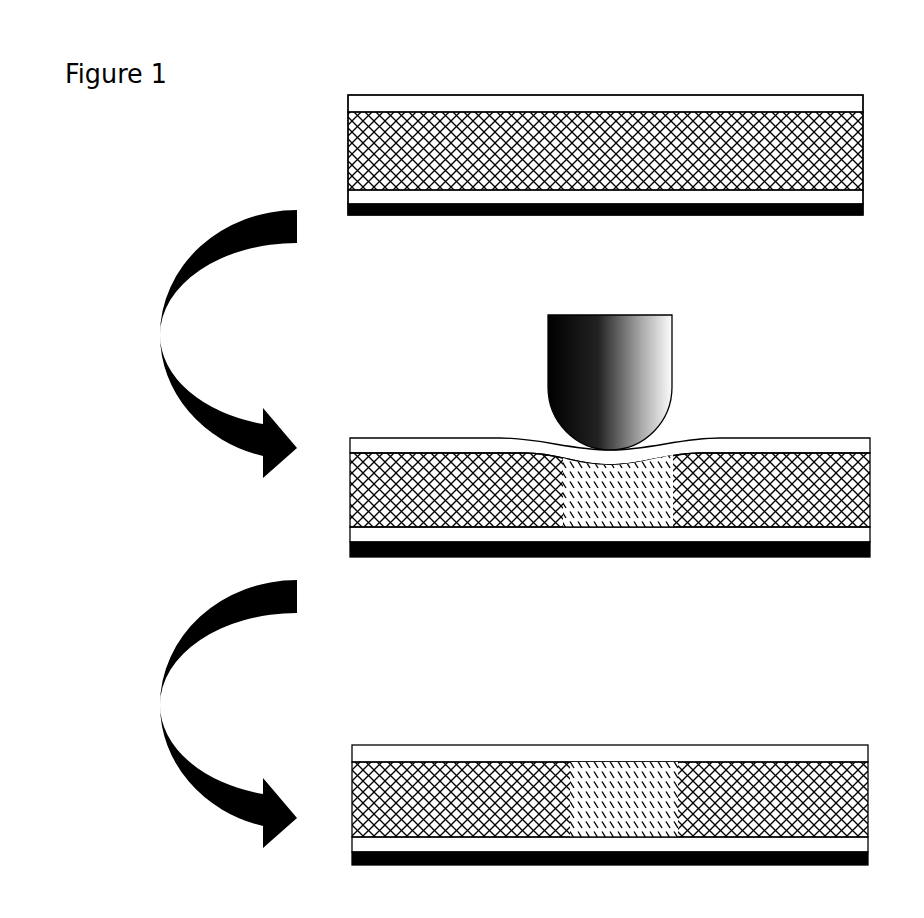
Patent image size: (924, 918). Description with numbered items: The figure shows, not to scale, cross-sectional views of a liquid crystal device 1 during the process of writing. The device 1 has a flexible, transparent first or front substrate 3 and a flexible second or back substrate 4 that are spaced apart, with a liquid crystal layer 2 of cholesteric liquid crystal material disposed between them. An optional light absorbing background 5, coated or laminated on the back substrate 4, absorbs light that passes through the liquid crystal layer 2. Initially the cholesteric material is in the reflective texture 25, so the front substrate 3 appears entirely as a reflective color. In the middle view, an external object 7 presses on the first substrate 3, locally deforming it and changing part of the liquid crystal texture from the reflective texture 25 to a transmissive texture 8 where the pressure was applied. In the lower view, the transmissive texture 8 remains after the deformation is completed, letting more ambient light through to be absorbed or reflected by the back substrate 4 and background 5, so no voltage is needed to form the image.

The liquid crystal device 1 is at (347, 85).
The liquid crystal layer 2 is at (603, 160).
The first substrate 3 is at (403, 108).
The second substrate 4 is at (602, 197).
The light absorbing background 5 is at (763, 213).
The external object 7 is at (610, 373).
The transmissive texture 8 is at (620, 490).
The reflective texture 25 is at (490, 130).